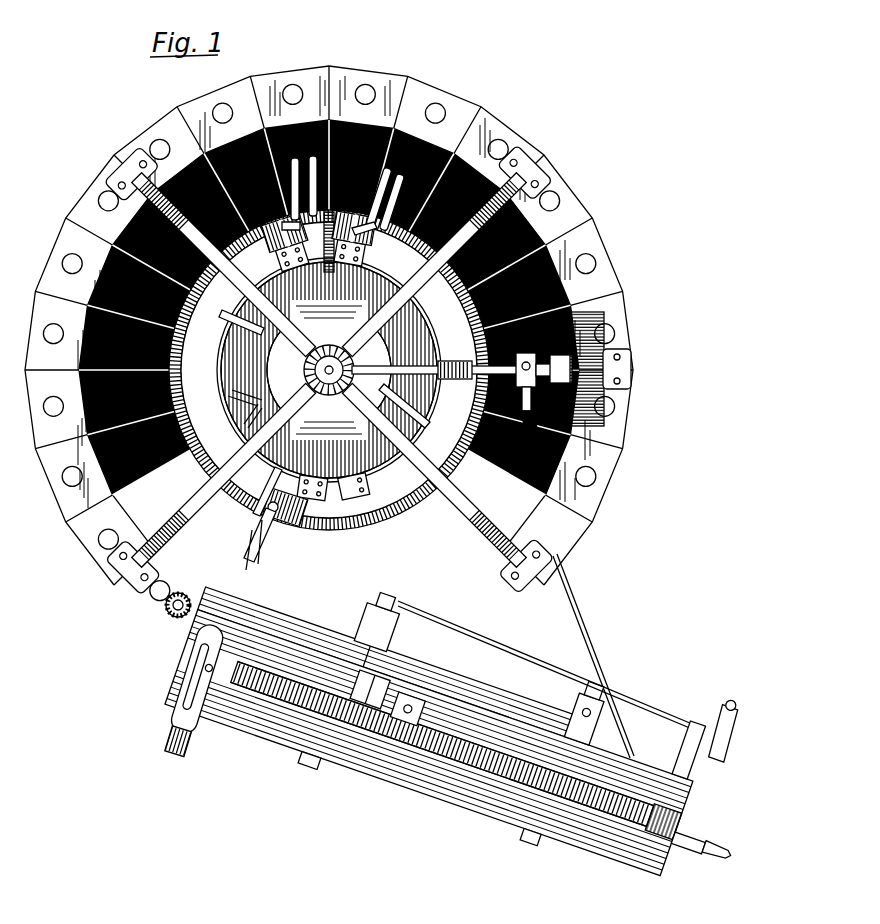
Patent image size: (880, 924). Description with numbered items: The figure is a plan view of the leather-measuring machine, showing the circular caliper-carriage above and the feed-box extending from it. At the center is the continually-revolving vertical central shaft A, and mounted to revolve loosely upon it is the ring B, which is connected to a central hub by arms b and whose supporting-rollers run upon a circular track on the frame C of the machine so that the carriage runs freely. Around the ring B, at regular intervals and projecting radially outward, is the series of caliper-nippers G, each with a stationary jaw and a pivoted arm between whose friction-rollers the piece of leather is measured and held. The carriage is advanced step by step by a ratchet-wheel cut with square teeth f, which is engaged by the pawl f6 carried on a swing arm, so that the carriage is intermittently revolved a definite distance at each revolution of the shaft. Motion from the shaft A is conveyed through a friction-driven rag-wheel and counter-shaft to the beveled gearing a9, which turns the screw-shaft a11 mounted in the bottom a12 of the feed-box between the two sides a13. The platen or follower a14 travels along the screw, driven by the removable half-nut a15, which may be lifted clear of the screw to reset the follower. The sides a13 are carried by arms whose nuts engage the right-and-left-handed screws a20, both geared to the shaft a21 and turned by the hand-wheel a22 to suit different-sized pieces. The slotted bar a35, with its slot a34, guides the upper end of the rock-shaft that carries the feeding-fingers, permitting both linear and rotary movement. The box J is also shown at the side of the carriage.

The driving shaft box J is at (572, 287).
The caliper-nippers G is at (252, 543).
The arms b is at (236, 320).
The vertical central shaft A is at (316, 371).
The square teeth f is at (262, 400).
The pawl f6 is at (250, 430).
The ring B is at (357, 482).
The frame C is at (420, 500).
The beveled gearing a9 is at (174, 614).
The screw-shaft a11 is at (292, 668).
The bottom a12 is at (512, 768).
The sides a13 is at (430, 760).
The platen or follower a14 is at (368, 700).
The half-nut a15 is at (407, 718).
The screws a20 is at (378, 592).
The shaft a21 is at (506, 640).
The hand-wheel a22 is at (728, 738).
The slot a34 is at (186, 697).
The slotted bar a35 is at (196, 672).